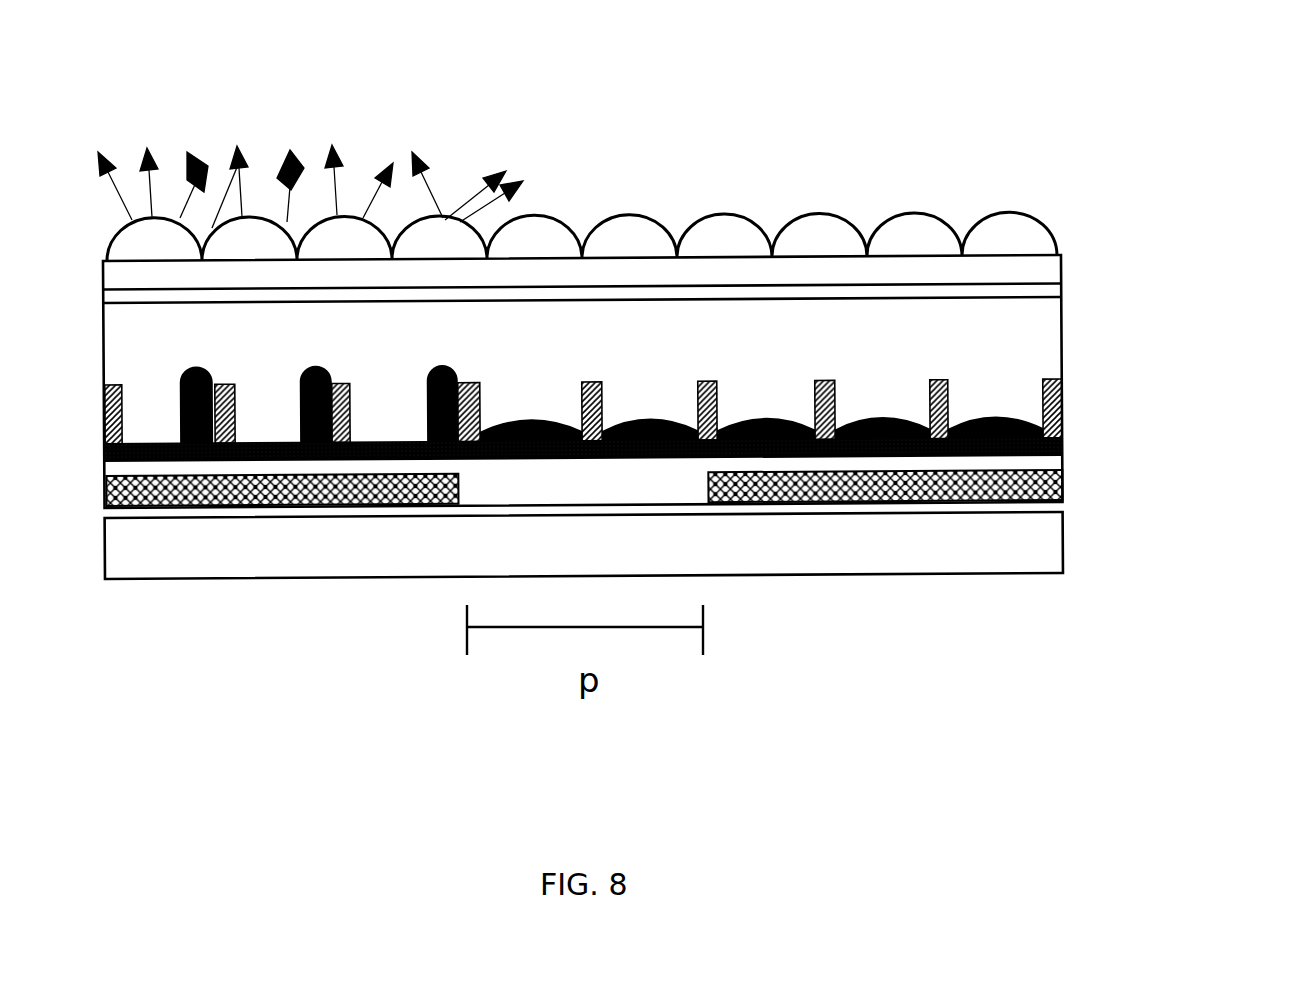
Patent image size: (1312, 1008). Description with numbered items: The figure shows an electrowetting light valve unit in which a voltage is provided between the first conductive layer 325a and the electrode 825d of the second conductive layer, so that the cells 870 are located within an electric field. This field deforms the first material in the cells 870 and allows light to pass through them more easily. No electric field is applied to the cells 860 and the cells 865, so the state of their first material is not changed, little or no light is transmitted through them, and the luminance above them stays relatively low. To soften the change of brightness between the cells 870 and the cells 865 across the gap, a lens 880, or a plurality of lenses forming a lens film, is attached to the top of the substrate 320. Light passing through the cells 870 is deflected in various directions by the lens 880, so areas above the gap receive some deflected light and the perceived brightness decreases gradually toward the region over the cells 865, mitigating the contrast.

The substrate 320 is at (1090, 257).
The first conductive layer 325a is at (1090, 293).
The electrode 825d is at (279, 528).
The cells 860 is at (644, 374).
The cells 865 is at (982, 367).
The cells 870 is at (367, 379).
The lens 880 is at (1032, 193).